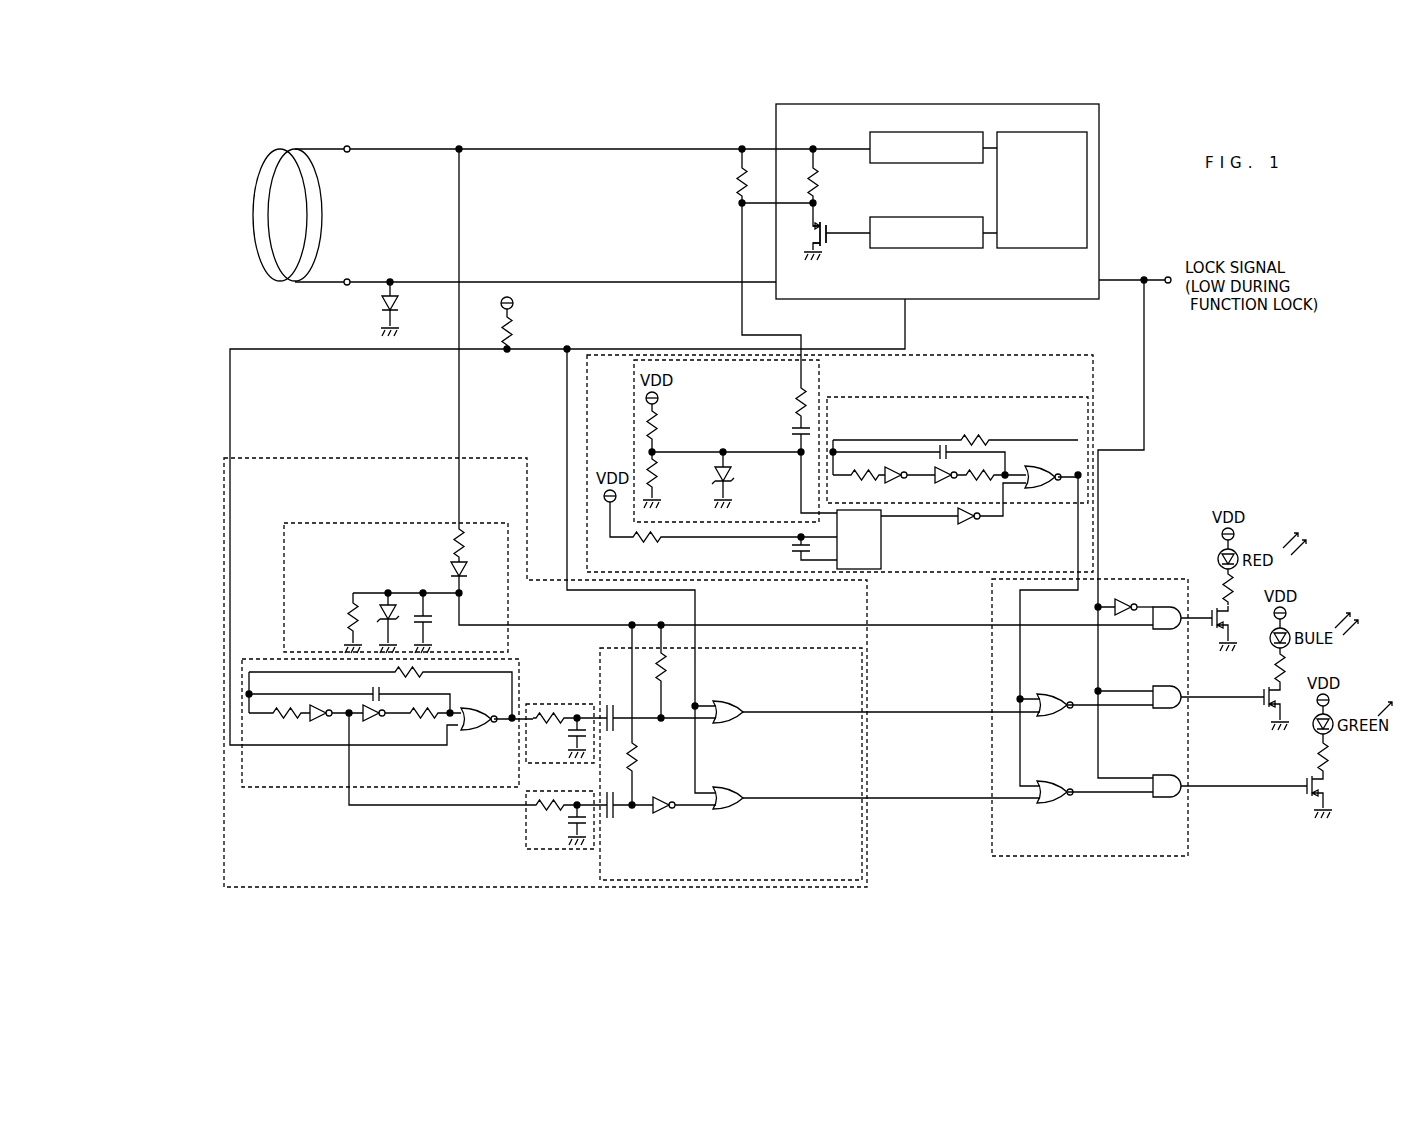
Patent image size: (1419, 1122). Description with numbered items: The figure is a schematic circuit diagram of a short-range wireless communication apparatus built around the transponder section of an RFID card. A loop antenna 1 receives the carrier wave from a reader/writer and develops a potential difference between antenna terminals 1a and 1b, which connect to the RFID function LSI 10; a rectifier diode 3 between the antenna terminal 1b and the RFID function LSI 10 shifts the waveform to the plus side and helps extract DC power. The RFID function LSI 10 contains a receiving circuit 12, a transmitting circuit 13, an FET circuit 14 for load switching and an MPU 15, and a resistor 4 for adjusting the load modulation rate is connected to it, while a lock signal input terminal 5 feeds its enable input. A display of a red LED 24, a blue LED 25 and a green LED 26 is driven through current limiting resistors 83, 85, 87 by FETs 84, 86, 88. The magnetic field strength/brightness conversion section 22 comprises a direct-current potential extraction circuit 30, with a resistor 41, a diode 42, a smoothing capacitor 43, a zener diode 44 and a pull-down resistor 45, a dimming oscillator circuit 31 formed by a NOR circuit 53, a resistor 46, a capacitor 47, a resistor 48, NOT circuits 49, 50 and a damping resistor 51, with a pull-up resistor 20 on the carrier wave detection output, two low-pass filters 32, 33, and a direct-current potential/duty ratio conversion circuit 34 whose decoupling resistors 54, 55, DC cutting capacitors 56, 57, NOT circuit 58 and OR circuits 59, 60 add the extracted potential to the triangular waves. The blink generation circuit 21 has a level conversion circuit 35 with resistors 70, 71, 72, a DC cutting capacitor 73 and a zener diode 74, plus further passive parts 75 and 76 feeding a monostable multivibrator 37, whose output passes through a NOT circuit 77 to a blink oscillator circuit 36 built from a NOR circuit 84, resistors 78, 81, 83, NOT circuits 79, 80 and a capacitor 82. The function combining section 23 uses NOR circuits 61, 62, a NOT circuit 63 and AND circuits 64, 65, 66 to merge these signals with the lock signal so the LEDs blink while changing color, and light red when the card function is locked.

The loop antenna 1 is at (264, 168).
The antenna terminal 1a is at (351, 146).
The antenna terminal 1b is at (345, 286).
The rectifier diode 3 is at (399, 306).
The resistor for adjusting a load modulation rate 4 is at (736, 180).
The lock signal input terminal 5 is at (1167, 277).
The RFID function LSI 10 is at (1099, 126).
The receiving circuit 12 is at (909, 163).
The transmitting circuit 13 is at (935, 216).
The FET circuit 14 is at (847, 223).
The MPU 15 is at (1088, 190).
The pull-up resistor 20 is at (512, 327).
The blink generation circuit 21 is at (1094, 366).
The magnetic field strength/brightness conversion section 22 is at (280, 458).
The function combining section 23 is at (988, 682).
The red LED 24 is at (1236, 546).
The blue LED 25 is at (1288, 625).
The green LED 26 is at (1331, 712).
The direct-current potential extraction circuit 30 is at (404, 522).
The dimming oscillator circuit 31 is at (312, 789).
The low-pass filter 32 is at (540, 702).
The low-pass filter 33 is at (540, 790).
The direct-current potential/duty ratio conversion circuit 34 is at (864, 851).
The level conversion circuit 35 is at (631, 390).
The blink oscillator circuit 36 is at (1089, 410).
The monostable multivibrator 37 is at (882, 536).
The resistor 41 is at (464, 540).
The diode 42 is at (466, 574).
The capacitor 43 is at (427, 630).
The zener diode 44 is at (342, 604).
The pull-down resistor 45 is at (340, 626).
The resistor for setting an oscillation frequency 46 is at (418, 676).
The capacitor 47 is at (372, 694).
The resistor for input protection 48 is at (284, 722).
The NOT circuit 49 is at (318, 724).
The NOT circuit 50 is at (370, 724).
The damping resistor 51 is at (430, 718).
The NOR circuit 53 is at (470, 710).
The decoupling resistor 54 is at (663, 684).
The decoupling resistor 55 is at (637, 758).
The DC cutting capacitor 56 is at (616, 712).
The DC cutting capacitor 57 is at (614, 820).
The NOT circuit 58 is at (666, 791).
The OR circuit 59 is at (745, 699).
The OR circuit 60 is at (745, 785).
The NOR circuit 61 is at (1060, 694).
The NOR circuit 62 is at (1060, 781).
The NOT circuit 63 is at (1120, 598).
The AND circuit 64 is at (1162, 634).
The AND circuit 65 is at (1162, 714).
The AND circuit 66 is at (1160, 774).
The resistor 70 is at (638, 418).
The resistor 71 is at (638, 452).
The resistor 72 is at (812, 393).
The DC cutting capacitor 73 is at (790, 432).
The zener diode 74 is at (732, 470).
The resistor 75 is at (647, 542).
The capacitor 76 is at (787, 547).
The NOT circuit 77 is at (962, 526).
The resistor for input protection 78 is at (865, 492).
The NOT circuit 79 is at (890, 487).
The NOT circuit 80 is at (940, 487).
The damping resistor 81 is at (985, 475).
The capacitor 82 is at (940, 452).
The resistor for setting a blink frequency 83 is at (985, 440).
The NOR circuit 84 is at (1052, 457).
The current limiting resistor 85 is at (1285, 672).
The FET 86 is at (1260, 690).
The current limiting resistor 87 is at (1328, 760).
The FET 88 is at (1303, 779).